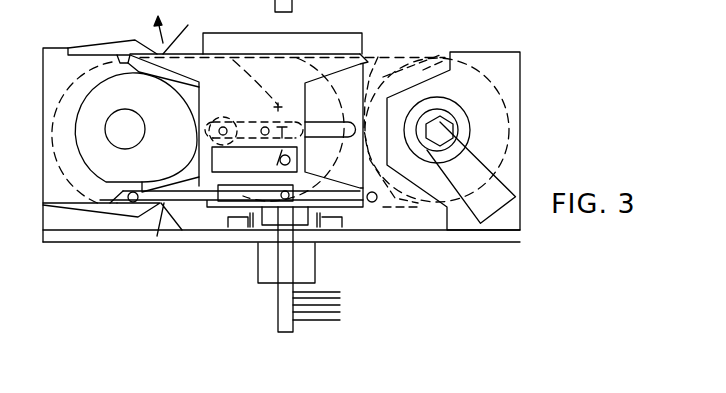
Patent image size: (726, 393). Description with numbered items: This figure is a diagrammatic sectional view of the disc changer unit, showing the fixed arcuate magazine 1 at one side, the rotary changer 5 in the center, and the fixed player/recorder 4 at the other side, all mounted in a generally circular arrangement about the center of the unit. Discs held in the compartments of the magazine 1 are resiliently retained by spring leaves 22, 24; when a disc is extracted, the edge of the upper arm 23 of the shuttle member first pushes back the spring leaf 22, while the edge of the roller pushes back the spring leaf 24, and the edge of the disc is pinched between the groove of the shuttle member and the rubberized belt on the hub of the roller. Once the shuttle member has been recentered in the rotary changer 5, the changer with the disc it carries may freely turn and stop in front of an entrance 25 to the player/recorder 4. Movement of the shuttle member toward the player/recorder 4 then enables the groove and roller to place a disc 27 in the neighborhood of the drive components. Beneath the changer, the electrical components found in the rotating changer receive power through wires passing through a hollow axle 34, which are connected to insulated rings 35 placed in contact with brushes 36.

The fixed arcuate magazine 1 is at (43, 64).
The fixed player/recorder 4 is at (513, 70).
The rotary changer 5 is at (318, 40).
The spring leaf 22 is at (157, 29).
The upper arm 23 is at (122, 41).
The spring leaf 24 is at (105, 203).
The entrance 25 is at (365, 78).
The disc 27 is at (423, 64).
The hollow axle 34 is at (278, 263).
The insulated rings 35 is at (276, 312).
The brushes 36 is at (343, 293).